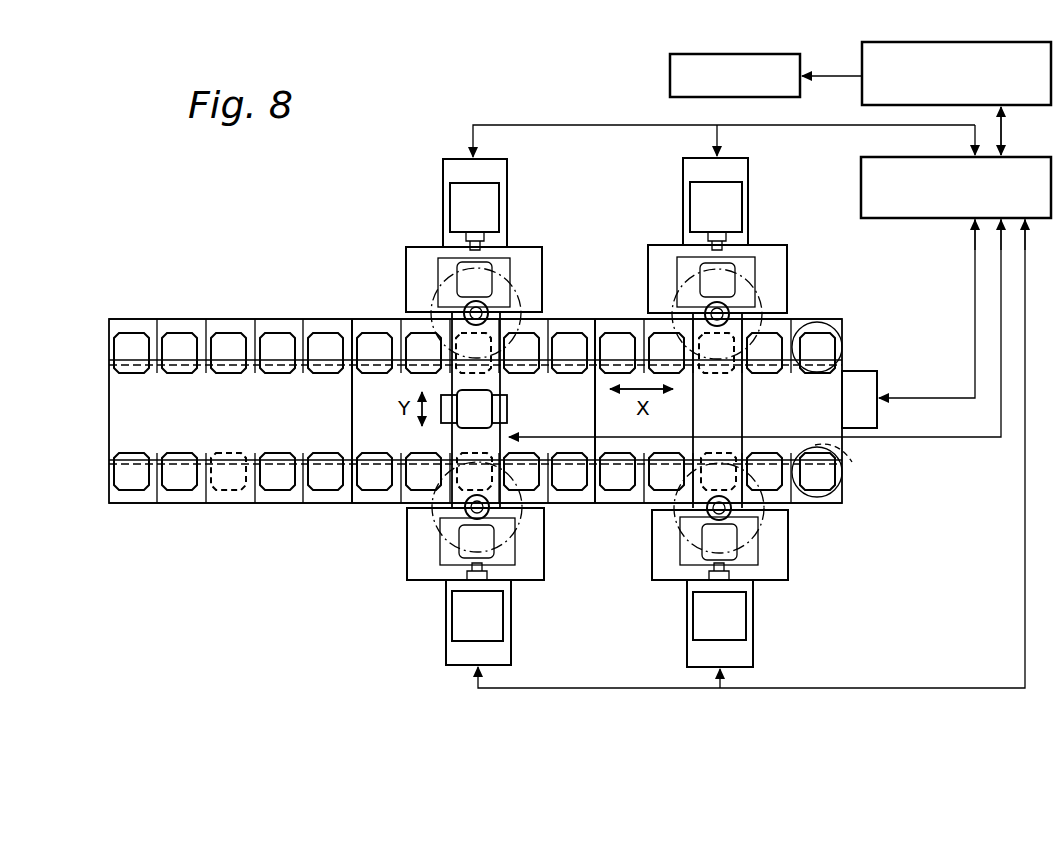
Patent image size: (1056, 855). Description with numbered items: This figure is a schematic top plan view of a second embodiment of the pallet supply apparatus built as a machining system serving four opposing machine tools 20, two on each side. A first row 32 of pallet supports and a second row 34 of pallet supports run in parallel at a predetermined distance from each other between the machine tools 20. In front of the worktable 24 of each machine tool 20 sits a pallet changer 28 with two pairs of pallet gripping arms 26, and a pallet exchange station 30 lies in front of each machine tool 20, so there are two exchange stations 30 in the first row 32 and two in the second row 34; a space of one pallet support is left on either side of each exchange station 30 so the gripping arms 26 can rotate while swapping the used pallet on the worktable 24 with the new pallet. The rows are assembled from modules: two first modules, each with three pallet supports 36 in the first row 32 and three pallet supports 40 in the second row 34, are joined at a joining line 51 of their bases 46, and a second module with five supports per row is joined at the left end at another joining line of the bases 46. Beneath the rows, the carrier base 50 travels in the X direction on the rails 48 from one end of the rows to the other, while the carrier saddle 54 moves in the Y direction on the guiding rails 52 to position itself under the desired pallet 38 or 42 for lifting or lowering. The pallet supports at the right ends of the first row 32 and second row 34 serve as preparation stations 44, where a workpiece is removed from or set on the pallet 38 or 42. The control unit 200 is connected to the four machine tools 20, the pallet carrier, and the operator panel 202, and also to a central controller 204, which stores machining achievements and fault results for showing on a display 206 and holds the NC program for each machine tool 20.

The machine tool 20 is at (511, 193).
The worktable 24 is at (500, 265).
The pallet gripping arms 26 is at (452, 340).
The pallet changer 28 is at (468, 302).
The pallet exchange station 30 is at (488, 345).
The first row of pallet supports 32 is at (104, 363).
The second row of pallet supports 34 is at (104, 472).
The pallet supports 36 is at (118, 325).
The pallet 38 is at (126, 345).
The pallet supports 40 is at (120, 500).
The pallet 42 is at (130, 470).
The preparation station 44 is at (845, 327).
The bases 46 is at (128, 417).
The rails 48 is at (780, 365).
The carrier base 50 is at (555, 444).
The joining line 51 is at (452, 415).
The guiding rails 52 is at (507, 428).
The carrier saddle 54 is at (449, 450).
The control unit 200 is at (1022, 157).
The operator panel 202 is at (877, 416).
The central controller 204 is at (862, 100).
The display 206 is at (670, 76).